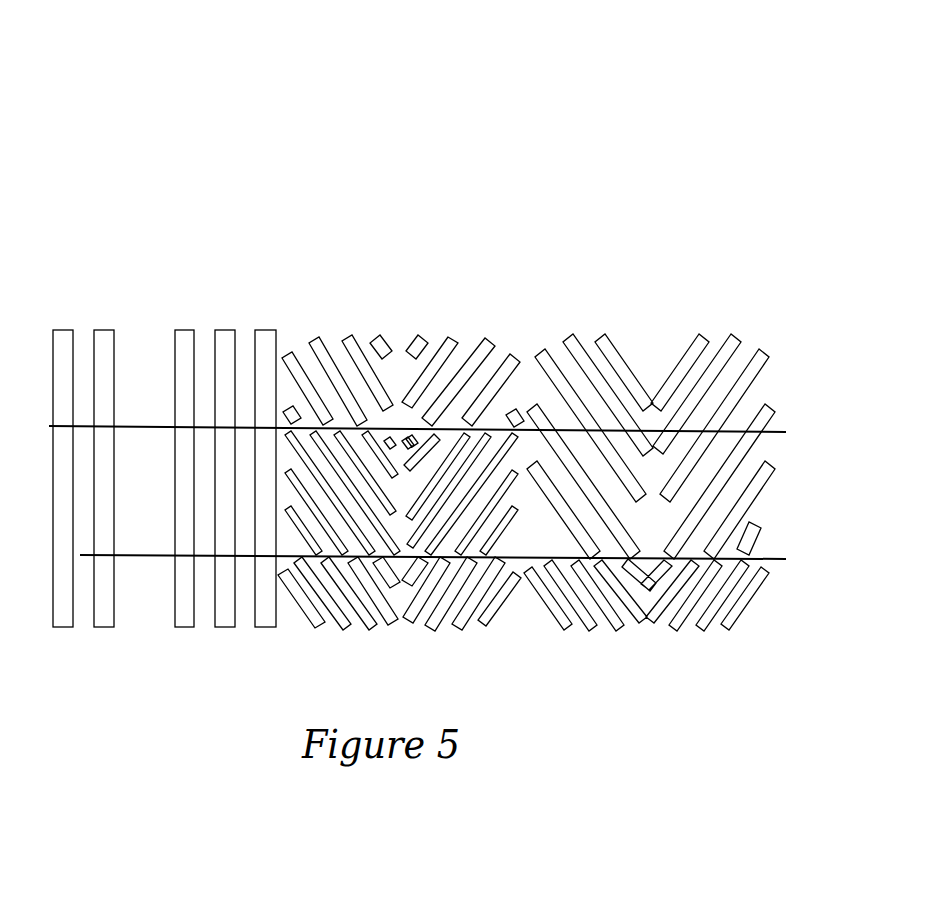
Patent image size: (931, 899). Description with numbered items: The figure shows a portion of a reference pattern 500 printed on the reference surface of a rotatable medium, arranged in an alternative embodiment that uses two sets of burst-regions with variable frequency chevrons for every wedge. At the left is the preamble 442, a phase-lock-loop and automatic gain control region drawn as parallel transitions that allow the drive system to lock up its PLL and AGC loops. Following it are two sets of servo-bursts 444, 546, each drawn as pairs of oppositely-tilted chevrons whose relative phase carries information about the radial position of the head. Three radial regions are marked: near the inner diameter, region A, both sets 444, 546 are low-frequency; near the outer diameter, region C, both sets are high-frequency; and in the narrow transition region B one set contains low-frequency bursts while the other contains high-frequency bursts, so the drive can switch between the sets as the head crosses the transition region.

The reference pattern portion 500 is at (444, 140).
The preamble 442 is at (275, 302).
The servo-bursts 444 is at (284, 302).
The second set of burst-regions 546 is at (768, 302).